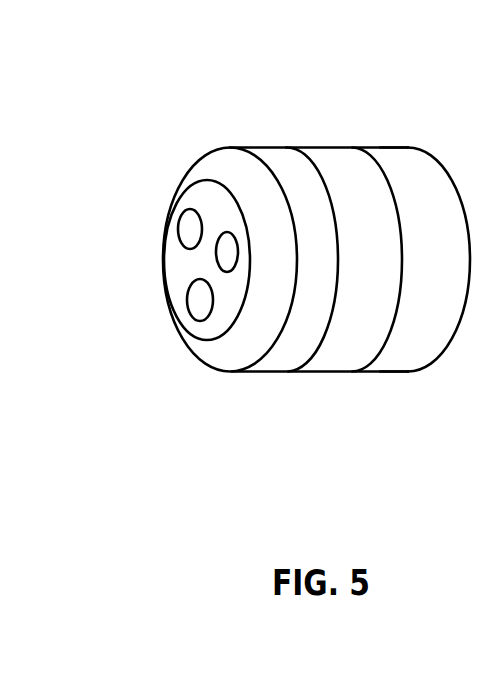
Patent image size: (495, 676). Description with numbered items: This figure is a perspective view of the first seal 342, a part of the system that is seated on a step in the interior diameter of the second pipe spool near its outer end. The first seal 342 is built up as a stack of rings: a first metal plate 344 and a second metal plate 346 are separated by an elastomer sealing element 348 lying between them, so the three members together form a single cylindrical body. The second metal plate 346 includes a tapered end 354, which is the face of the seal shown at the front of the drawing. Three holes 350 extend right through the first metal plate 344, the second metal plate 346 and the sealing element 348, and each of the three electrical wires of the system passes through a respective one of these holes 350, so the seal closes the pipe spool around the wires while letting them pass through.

The first seal 342 is at (313, 148).
The first metal plate 344 is at (398, 362).
The second metal plate 346 is at (274, 362).
The elastomer sealing element 348 is at (328, 362).
The holes 350 is at (198, 306).
The tapered end 354 is at (232, 353).